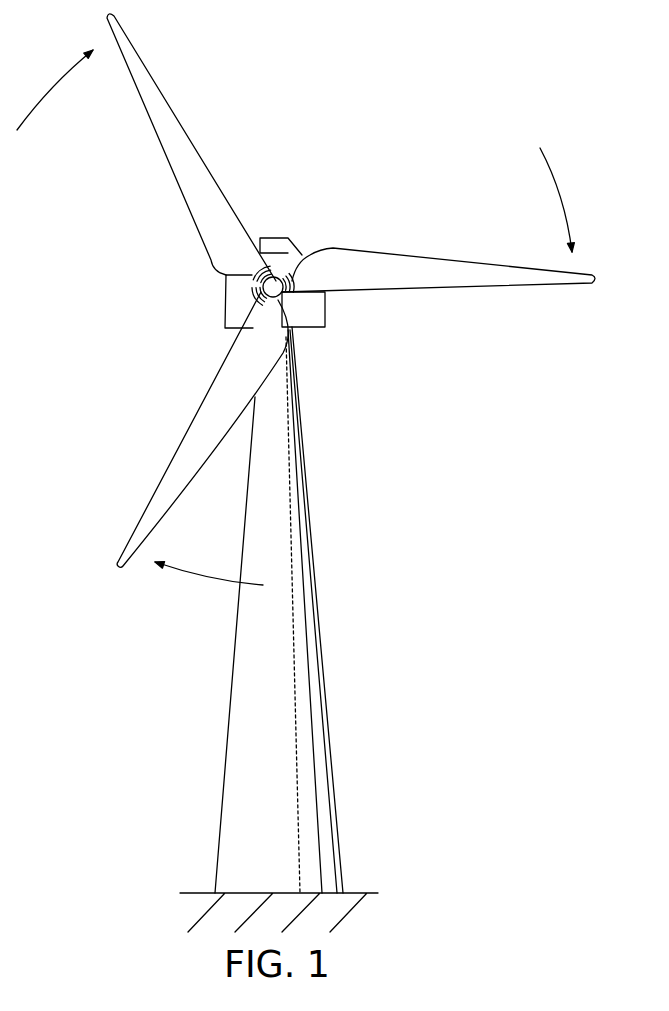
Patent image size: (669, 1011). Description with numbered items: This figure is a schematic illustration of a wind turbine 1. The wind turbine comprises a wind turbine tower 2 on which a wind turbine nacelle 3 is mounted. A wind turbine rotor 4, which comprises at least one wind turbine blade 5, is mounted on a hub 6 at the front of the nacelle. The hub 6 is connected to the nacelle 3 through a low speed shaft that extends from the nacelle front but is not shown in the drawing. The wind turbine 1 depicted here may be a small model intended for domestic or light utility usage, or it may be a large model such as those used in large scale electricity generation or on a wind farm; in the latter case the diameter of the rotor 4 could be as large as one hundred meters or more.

The wind turbine 1 is at (306, 473).
The wind turbine tower 2 is at (322, 648).
The wind turbine nacelle 3 is at (319, 312).
The wind turbine rotor 4 is at (306, 299).
The wind turbine blade 5 is at (524, 273).
The hub 6 is at (274, 283).